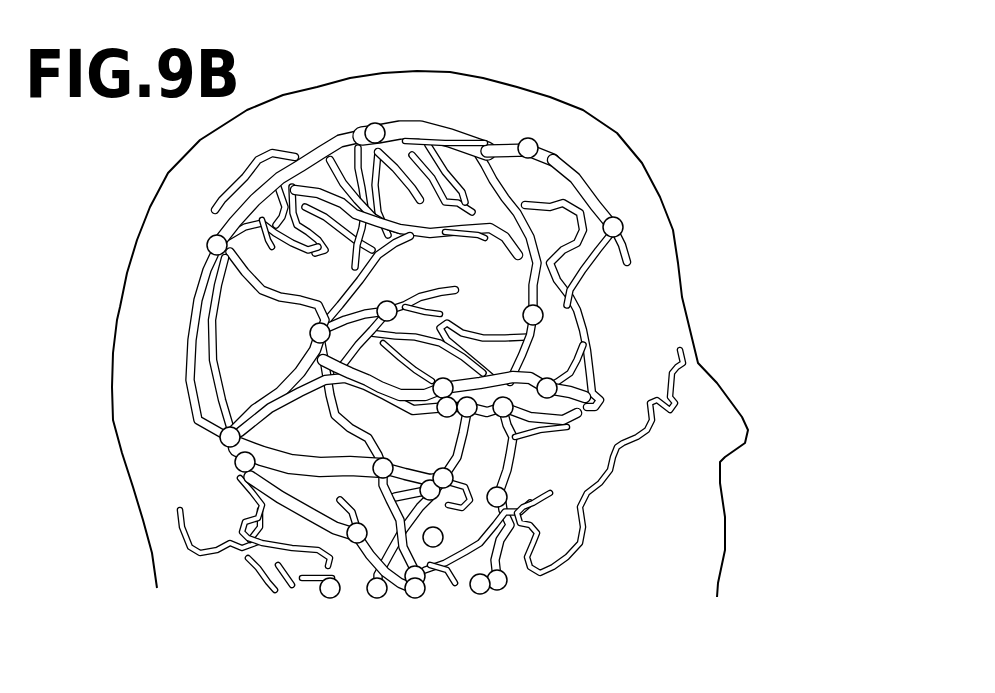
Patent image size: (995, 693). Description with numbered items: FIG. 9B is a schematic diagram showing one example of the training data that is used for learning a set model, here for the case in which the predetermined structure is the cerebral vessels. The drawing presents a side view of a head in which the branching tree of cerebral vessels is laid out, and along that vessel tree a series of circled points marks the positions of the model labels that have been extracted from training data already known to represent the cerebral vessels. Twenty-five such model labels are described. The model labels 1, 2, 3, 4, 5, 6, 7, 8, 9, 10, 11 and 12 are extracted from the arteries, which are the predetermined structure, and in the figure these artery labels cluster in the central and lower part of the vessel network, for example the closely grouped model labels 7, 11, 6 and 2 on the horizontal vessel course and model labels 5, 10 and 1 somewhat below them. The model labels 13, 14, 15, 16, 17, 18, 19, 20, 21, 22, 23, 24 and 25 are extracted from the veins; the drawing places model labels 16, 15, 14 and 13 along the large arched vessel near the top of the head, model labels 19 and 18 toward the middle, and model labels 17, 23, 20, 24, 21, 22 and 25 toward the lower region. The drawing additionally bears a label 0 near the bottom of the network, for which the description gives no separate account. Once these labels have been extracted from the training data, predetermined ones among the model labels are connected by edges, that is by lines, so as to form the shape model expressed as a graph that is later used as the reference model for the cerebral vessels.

The measurement position 0 is at (504, 573).
The model label 1 is at (504, 492).
The model label 2 is at (512, 414).
The model label 3 is at (555, 389).
The model label 4 is at (415, 602).
The model label 5 is at (394, 470).
The model label 6 is at (472, 418).
The model label 7 is at (443, 376).
The model label 8 is at (422, 574).
The model label 9 is at (324, 578).
The model label 10 is at (448, 476).
The model label 11 is at (434, 409).
The model label 12 is at (535, 302).
The model label 13 is at (628, 225).
The model label 14 is at (539, 139).
The model label 15 is at (372, 120).
The model label 16 is at (208, 234).
The model label 17 is at (213, 439).
The model label 18 is at (389, 298).
The model label 19 is at (319, 320).
The model label 20 is at (385, 455).
The model label 21 is at (449, 533).
The model label 22 is at (480, 600).
The model label 23 is at (229, 467).
The model label 24 is at (361, 520).
The model label 25 is at (375, 602).